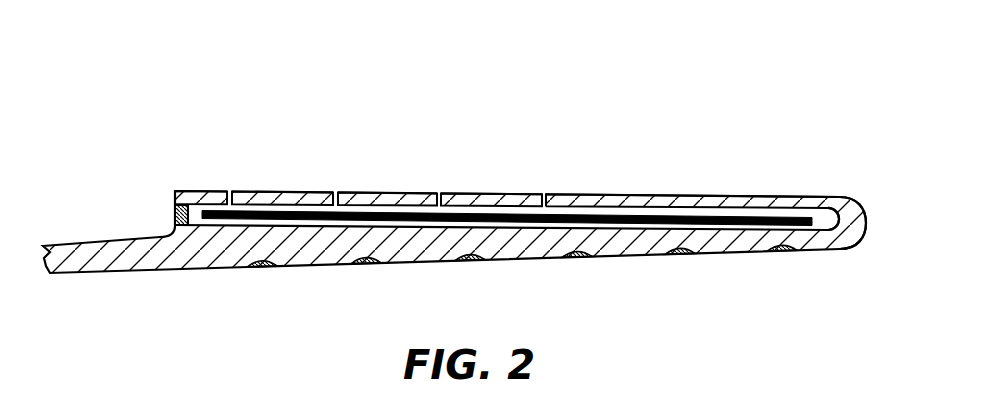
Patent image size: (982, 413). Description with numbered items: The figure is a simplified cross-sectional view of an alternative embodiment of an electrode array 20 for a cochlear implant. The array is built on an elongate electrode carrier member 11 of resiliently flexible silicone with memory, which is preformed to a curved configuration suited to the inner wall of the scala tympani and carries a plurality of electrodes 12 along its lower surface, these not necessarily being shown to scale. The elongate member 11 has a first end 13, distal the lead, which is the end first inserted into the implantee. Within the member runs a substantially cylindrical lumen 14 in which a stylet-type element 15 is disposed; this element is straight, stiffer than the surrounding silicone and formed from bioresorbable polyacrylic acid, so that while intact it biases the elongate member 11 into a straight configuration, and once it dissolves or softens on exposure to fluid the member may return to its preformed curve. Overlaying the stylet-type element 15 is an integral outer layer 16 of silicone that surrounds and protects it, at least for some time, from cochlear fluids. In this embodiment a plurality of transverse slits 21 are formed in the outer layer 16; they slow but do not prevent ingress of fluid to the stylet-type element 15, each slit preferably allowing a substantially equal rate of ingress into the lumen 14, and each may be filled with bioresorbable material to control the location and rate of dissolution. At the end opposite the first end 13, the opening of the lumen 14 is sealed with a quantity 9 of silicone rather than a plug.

The quantity of silicone 9 is at (173, 217).
The elongate electrode carrier member 11 is at (425, 250).
The electrodes 12 is at (363, 265).
The first end 13 is at (847, 197).
The lumen 14 is at (523, 232).
The stylet-type element 15 is at (693, 219).
The outer layer 16 is at (623, 194).
The electrode array 20 is at (512, 143).
The transverse slits 21 is at (333, 191).